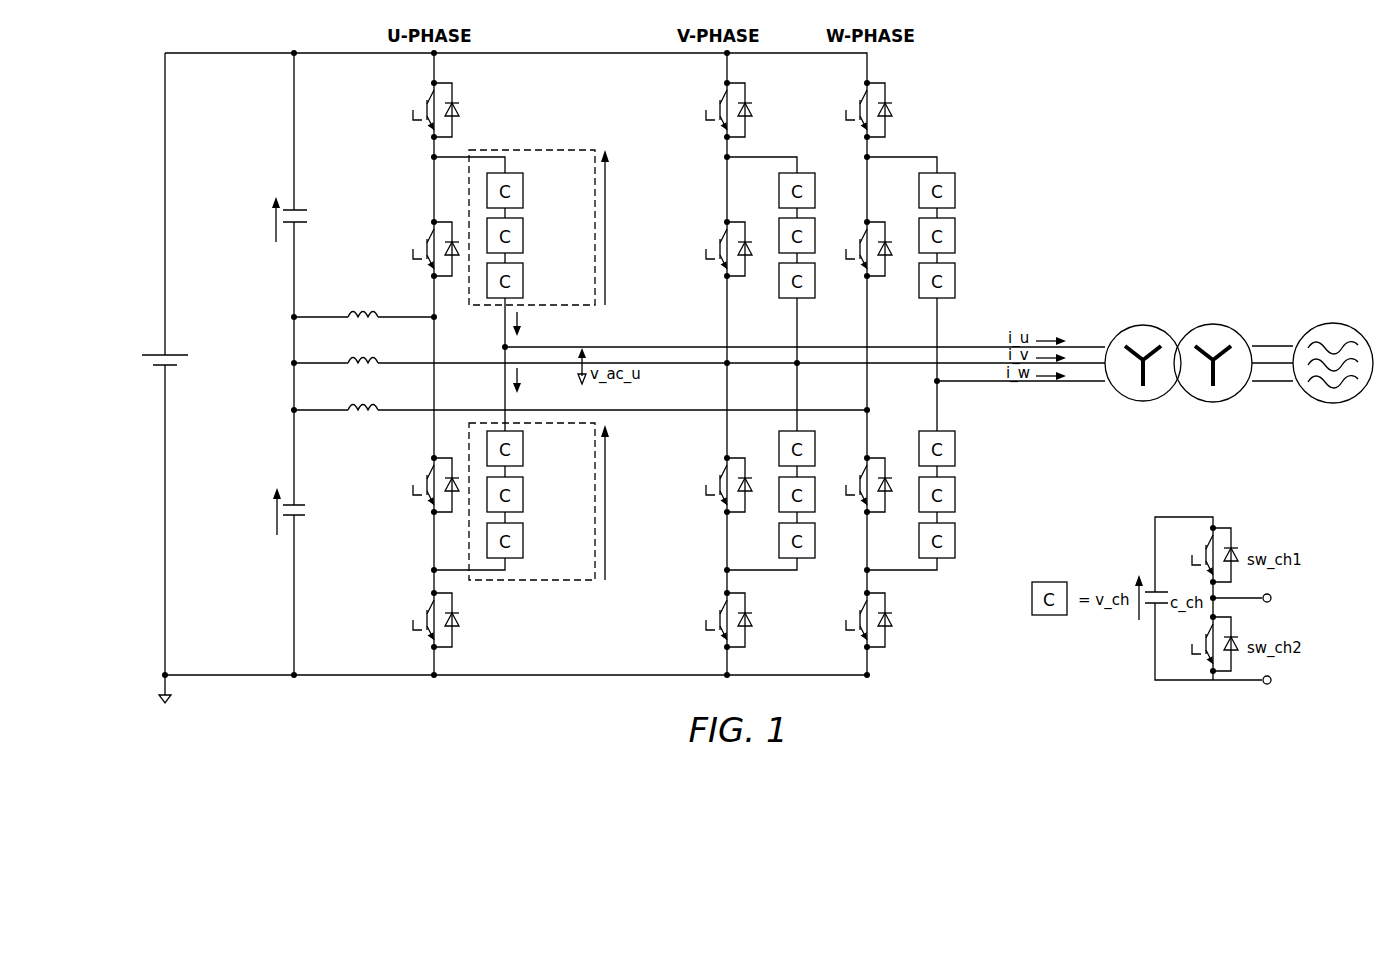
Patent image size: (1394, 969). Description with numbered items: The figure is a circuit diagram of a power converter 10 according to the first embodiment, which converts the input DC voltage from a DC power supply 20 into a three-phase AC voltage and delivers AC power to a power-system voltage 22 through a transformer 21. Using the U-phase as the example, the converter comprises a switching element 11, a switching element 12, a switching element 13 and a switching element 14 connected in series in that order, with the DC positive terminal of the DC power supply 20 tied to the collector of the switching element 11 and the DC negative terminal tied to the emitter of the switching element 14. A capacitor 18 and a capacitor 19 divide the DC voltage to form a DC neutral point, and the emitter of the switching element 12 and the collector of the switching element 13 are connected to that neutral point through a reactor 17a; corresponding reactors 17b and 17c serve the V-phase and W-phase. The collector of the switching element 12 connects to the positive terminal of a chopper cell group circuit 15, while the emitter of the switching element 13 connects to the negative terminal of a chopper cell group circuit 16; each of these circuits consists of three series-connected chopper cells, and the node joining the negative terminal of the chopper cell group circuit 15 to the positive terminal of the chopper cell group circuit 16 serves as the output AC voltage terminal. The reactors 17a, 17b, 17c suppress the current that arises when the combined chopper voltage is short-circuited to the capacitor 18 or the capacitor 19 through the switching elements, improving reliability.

The power converter 10 is at (1015, 112).
The switching element (sw_u1) 11 is at (408, 111).
The switching element (sw_u2) 12 is at (408, 250).
The switching element (sw_u3) 13 is at (408, 486).
The switching element (sw_u4) 14 is at (408, 621).
The chopper cell group circuit (ch_up) 15 is at (540, 268).
The chopper cell group circuit (ch_un) 16 is at (540, 495).
The reactor (lb_u) 17a is at (365, 328).
The reactor (lb_v) 17b is at (699, 374).
The reactor (lb_w) 17c is at (582, 420).
The capacitor (c_p) 18 is at (276, 219).
The capacitor (c_n) 19 is at (276, 511).
The DC power supply 20 is at (162, 368).
The transformer (tr) 21 is at (1199, 346).
The power-system voltage (v_s) 22 is at (1333, 344).